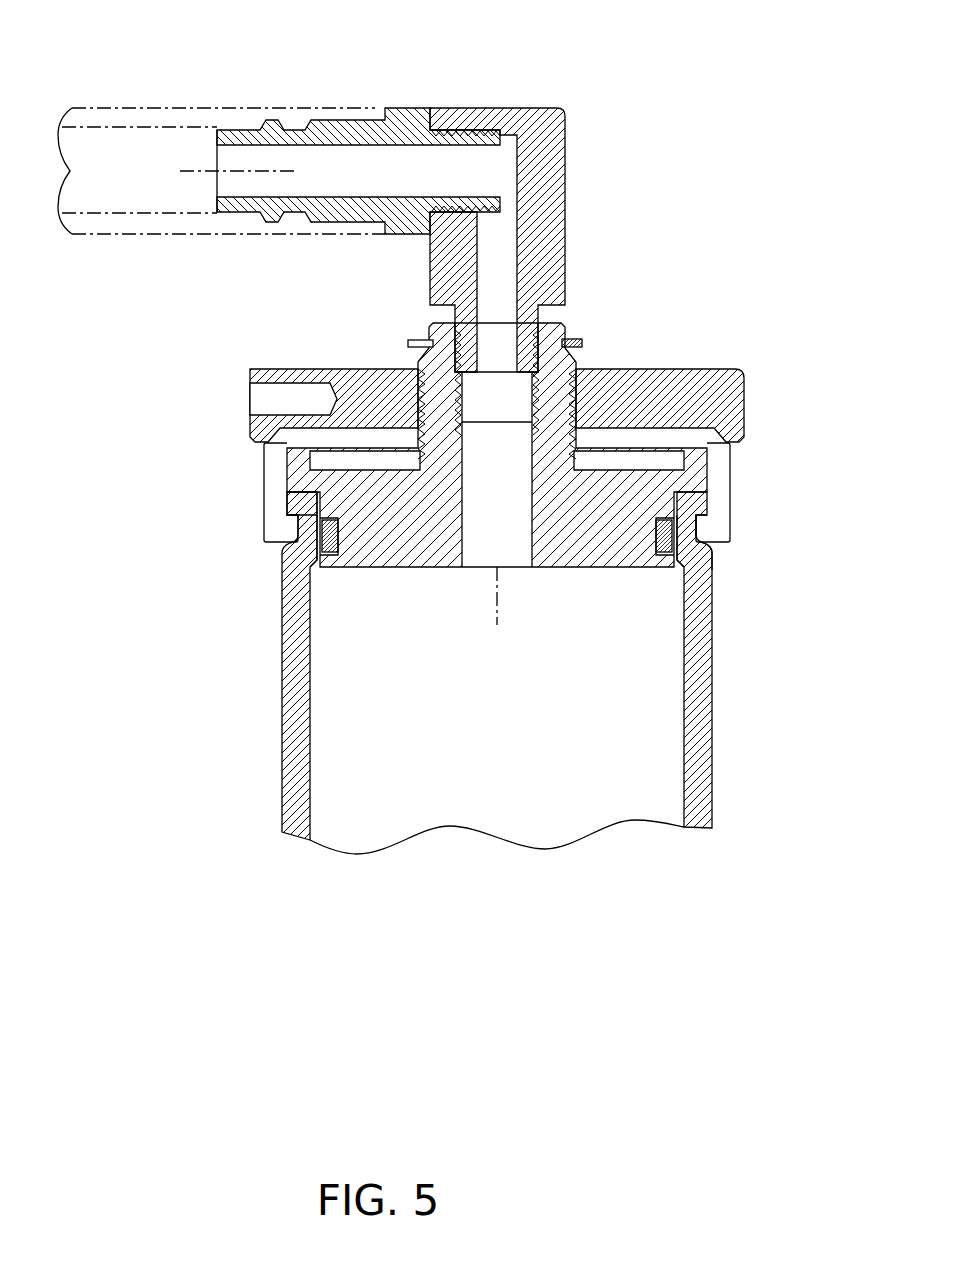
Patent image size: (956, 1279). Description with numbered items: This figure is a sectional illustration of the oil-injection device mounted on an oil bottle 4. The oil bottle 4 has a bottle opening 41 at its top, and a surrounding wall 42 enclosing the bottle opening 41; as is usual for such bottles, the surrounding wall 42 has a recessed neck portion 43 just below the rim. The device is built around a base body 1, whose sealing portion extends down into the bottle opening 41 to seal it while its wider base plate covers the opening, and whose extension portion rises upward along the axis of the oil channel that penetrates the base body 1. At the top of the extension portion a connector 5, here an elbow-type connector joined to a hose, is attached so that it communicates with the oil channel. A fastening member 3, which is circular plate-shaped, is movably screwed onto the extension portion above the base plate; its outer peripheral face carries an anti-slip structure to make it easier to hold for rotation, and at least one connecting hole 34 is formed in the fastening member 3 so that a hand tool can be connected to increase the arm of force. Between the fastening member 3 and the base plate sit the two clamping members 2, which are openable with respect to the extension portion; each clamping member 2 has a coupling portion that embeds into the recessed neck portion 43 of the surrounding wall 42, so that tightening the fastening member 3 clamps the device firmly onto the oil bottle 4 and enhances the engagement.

The base body 1 is at (372, 513).
The clamping member 2 is at (273, 502).
The fastening member 3 is at (449, 359).
The connecting hole 34 is at (266, 404).
The oil bottle 4 is at (475, 673).
The bottle opening 41 is at (356, 576).
The surrounding wall 42 is at (307, 524).
The neck portion 43 is at (724, 553).
The connector 5 is at (472, 99).